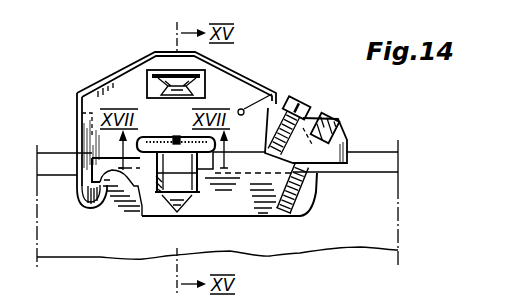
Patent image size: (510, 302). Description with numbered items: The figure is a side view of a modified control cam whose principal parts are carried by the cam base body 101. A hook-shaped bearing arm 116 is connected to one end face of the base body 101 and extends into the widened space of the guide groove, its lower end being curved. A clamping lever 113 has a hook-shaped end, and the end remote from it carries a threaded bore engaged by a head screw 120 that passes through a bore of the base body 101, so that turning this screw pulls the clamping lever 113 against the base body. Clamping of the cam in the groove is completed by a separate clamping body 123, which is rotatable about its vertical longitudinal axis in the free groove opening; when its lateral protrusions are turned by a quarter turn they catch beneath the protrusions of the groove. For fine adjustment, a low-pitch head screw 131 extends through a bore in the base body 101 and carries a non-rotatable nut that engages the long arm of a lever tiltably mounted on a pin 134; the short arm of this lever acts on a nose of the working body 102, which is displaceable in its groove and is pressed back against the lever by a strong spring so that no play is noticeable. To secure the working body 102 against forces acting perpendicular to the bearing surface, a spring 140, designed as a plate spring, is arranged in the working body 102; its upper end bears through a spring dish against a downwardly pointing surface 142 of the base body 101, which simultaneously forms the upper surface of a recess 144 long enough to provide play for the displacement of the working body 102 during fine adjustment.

The cam base body 101 is at (86, 106).
The working body 102 is at (118, 74).
The clamping lever 113 is at (226, 208).
The bearing arm 116 is at (85, 207).
The head screw 120 is at (338, 124).
The clamping body 123 is at (156, 192).
The head screw 131 is at (297, 105).
The pin 134 is at (272, 91).
The spring 140 is at (157, 73).
The downwardly pointing surface 142 is at (196, 66).
The recess 144 is at (202, 82).